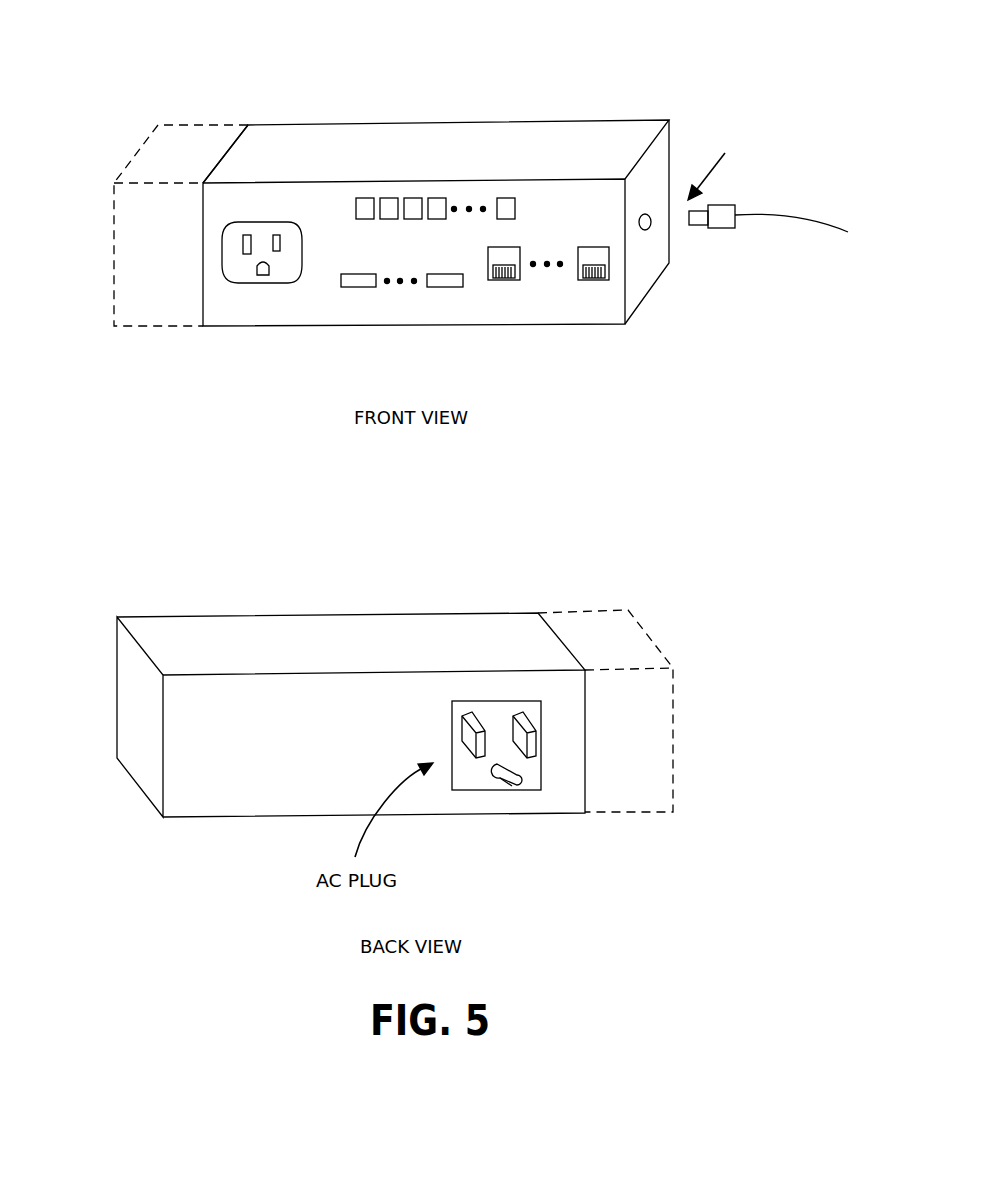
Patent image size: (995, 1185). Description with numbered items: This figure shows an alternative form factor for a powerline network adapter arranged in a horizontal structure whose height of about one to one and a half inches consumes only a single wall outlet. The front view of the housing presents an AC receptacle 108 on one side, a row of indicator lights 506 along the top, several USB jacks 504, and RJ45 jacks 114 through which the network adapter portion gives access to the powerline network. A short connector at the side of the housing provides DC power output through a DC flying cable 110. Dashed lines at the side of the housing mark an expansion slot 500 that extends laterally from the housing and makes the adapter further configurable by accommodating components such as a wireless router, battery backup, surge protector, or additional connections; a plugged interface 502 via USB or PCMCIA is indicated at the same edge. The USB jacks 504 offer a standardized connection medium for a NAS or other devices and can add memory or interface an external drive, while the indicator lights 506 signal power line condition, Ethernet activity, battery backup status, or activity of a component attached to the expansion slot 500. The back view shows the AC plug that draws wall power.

The expansion slot 500 is at (178, 124).
The plugged interface via USB/PCMIA/etc. 502 is at (238, 124).
The indicator lights 506 is at (355, 193).
The AC receptacle 108 is at (232, 268).
The USB jacks 504 is at (472, 286).
The RJ45 jacks 114 is at (477, 279).
The DC flying cable 110 is at (783, 225).